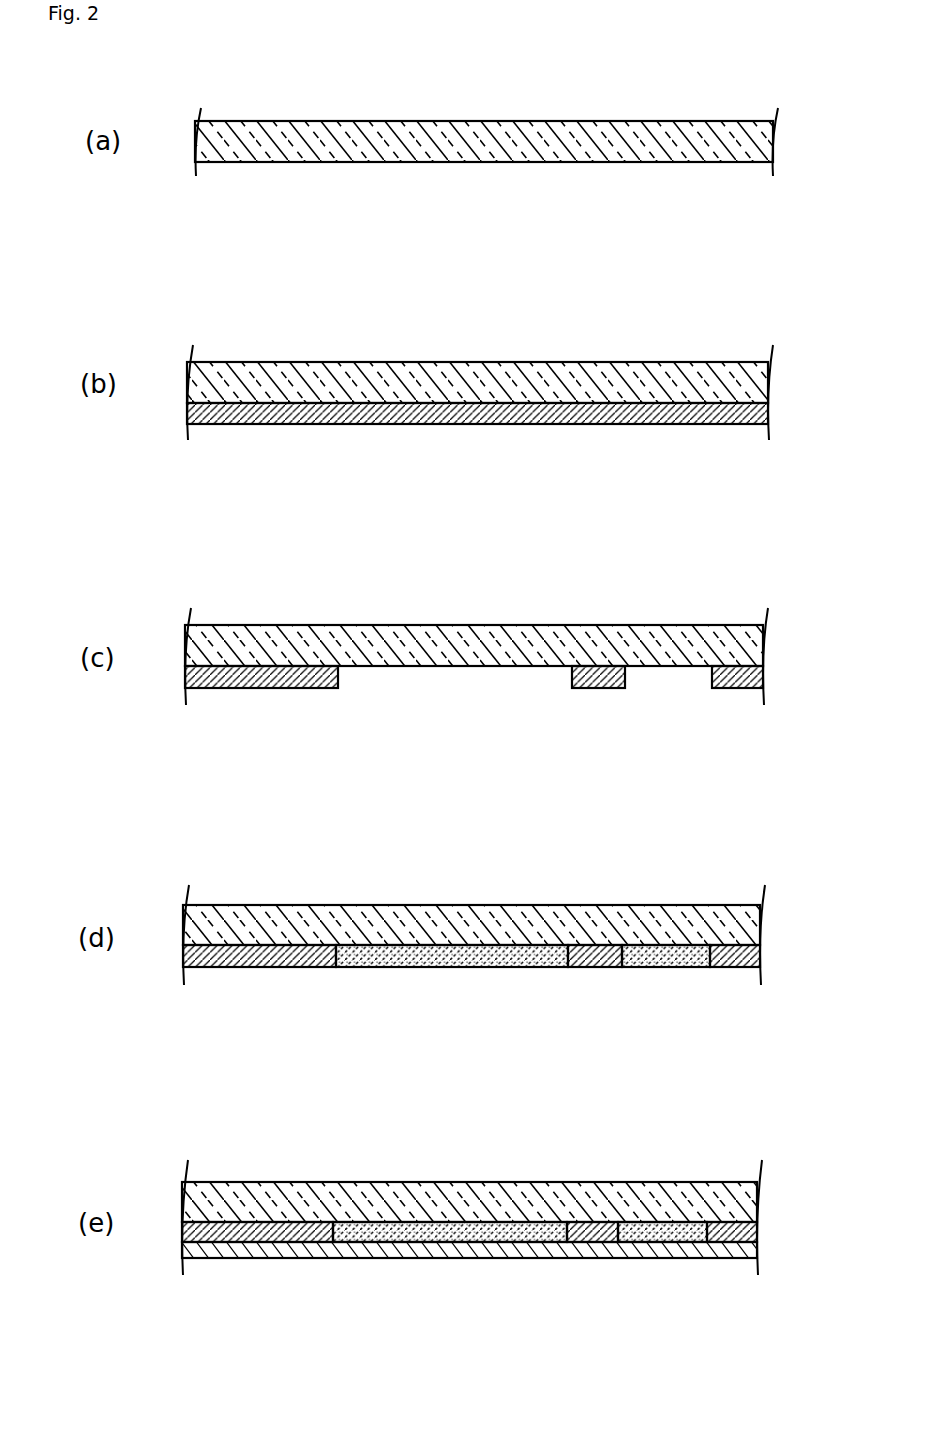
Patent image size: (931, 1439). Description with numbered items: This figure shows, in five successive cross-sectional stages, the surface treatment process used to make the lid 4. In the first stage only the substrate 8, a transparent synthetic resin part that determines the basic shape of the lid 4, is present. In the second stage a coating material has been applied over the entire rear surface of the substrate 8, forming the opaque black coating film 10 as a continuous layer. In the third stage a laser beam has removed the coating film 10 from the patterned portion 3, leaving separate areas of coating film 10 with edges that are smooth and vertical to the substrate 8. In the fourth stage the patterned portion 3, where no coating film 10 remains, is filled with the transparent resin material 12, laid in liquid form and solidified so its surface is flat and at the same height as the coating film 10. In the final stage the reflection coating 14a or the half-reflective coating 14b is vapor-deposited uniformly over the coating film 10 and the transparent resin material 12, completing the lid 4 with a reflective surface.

The substrate 8 is at (333, 136).
The coating film 10 is at (458, 424).
The patterned portion 3 is at (528, 680).
The transparent resin material 12 is at (370, 967).
The reflection coating 14a is at (469, 1291).
The half-reflective coating 14b is at (418, 1256).
The lid 4 is at (738, 1158).